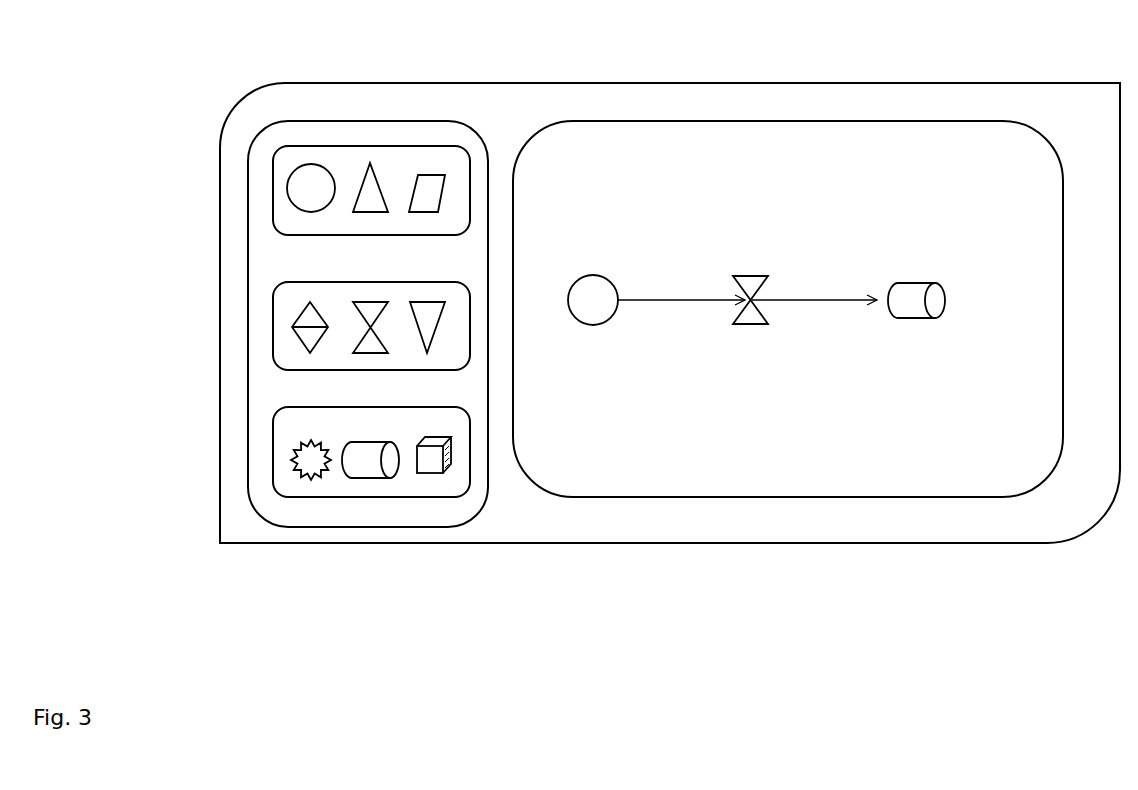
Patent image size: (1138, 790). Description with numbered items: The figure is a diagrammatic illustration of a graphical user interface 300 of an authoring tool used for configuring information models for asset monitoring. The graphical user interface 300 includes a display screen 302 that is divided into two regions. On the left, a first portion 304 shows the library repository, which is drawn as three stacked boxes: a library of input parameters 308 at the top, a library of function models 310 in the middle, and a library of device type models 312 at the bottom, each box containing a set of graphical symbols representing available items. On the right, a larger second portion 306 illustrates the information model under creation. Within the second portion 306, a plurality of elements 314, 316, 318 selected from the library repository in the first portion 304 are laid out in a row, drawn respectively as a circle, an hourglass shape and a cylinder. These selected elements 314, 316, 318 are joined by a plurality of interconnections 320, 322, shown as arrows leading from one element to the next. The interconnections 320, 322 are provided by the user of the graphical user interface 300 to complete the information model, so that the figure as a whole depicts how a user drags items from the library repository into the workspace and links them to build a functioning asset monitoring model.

The graphical user interface 300 is at (140, 107).
The display screen 302 is at (388, 82).
The first portion 304 is at (248, 197).
The second portion 306 is at (628, 120).
The library of input parameters 308 is at (273, 153).
The library of function models 310 is at (273, 326).
The library of device type models 312 is at (273, 455).
The element 314 is at (605, 265).
The element 316 is at (748, 272).
The element 318 is at (912, 275).
The interconnection 320 is at (687, 305).
The interconnection 322 is at (832, 305).